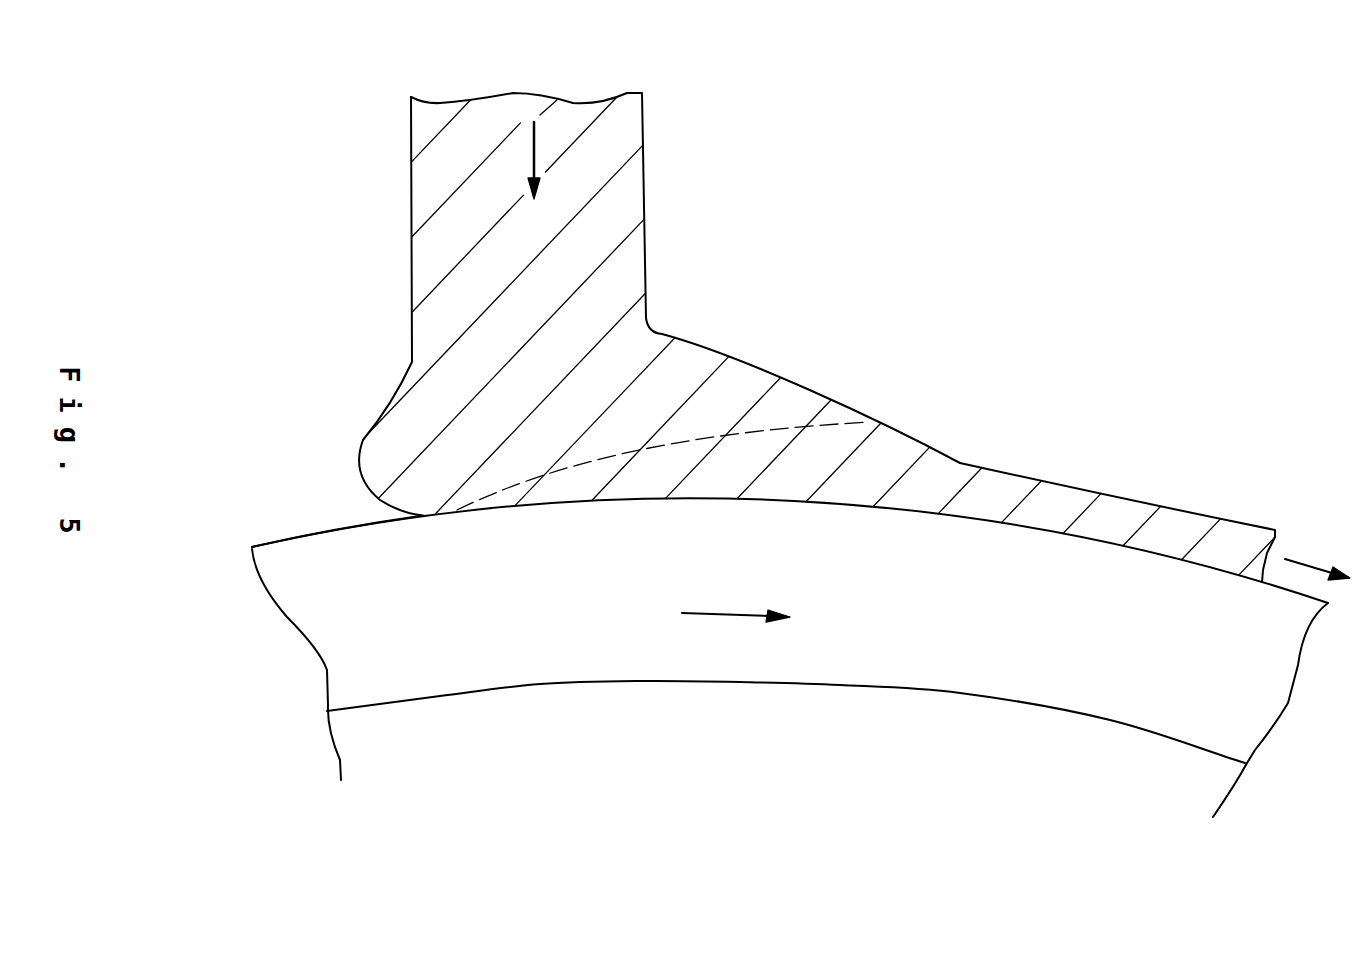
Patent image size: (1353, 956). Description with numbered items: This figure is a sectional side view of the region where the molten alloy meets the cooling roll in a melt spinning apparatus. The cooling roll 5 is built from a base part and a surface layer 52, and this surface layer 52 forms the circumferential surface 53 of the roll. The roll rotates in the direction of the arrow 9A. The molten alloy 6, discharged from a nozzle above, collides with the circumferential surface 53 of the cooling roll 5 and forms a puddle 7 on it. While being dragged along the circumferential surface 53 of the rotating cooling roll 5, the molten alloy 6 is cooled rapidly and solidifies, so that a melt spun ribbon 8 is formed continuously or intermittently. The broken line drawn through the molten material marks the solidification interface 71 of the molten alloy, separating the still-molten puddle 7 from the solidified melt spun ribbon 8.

The cooling roll 5 is at (318, 662).
The surface layer 52 is at (548, 650).
The circumferential surface 53 is at (330, 530).
The molten alloy 6 is at (450, 205).
The puddle 7 is at (703, 392).
The solidification interface 71 is at (765, 427).
The melt spun ribbon 8 is at (1222, 537).
The arrow indicating rotation direction of cooling roll 9A is at (736, 601).